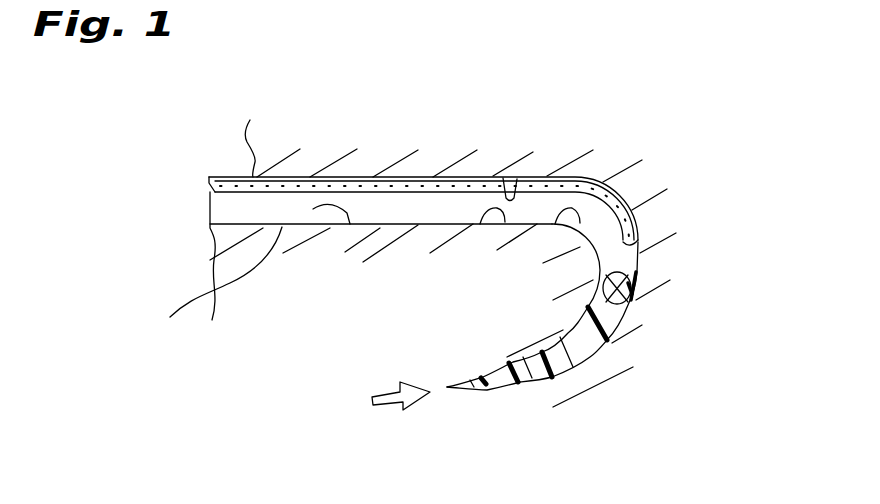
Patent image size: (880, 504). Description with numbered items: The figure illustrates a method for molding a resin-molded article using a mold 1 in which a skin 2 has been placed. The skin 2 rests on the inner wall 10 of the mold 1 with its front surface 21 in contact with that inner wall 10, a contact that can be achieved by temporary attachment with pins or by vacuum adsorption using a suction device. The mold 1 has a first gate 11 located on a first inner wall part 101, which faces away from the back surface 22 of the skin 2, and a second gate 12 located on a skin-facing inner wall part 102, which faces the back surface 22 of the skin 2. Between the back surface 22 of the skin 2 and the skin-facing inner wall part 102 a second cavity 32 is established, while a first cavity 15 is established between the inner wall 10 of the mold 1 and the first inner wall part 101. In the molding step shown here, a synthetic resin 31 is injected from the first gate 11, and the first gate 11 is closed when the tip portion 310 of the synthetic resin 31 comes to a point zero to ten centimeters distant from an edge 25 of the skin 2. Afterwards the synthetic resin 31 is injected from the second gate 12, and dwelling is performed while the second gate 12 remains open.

The mold 1 is at (667, 143).
The skin 2 is at (273, 196).
The front surface 21 is at (230, 178).
The back surface 22 is at (243, 197).
The edge 25 is at (638, 232).
The second cavity 32 is at (357, 215).
The inner wall 10 is at (510, 200).
The first cavity 15 is at (613, 262).
The skin-facing inner wall part 102 is at (480, 224).
The second gate 12 is at (366, 261).
The tip portion 310 is at (632, 307).
The synthetic resin 31 is at (606, 340).
The first inner wall part 101 is at (566, 364).
The first gate 11 is at (473, 382).